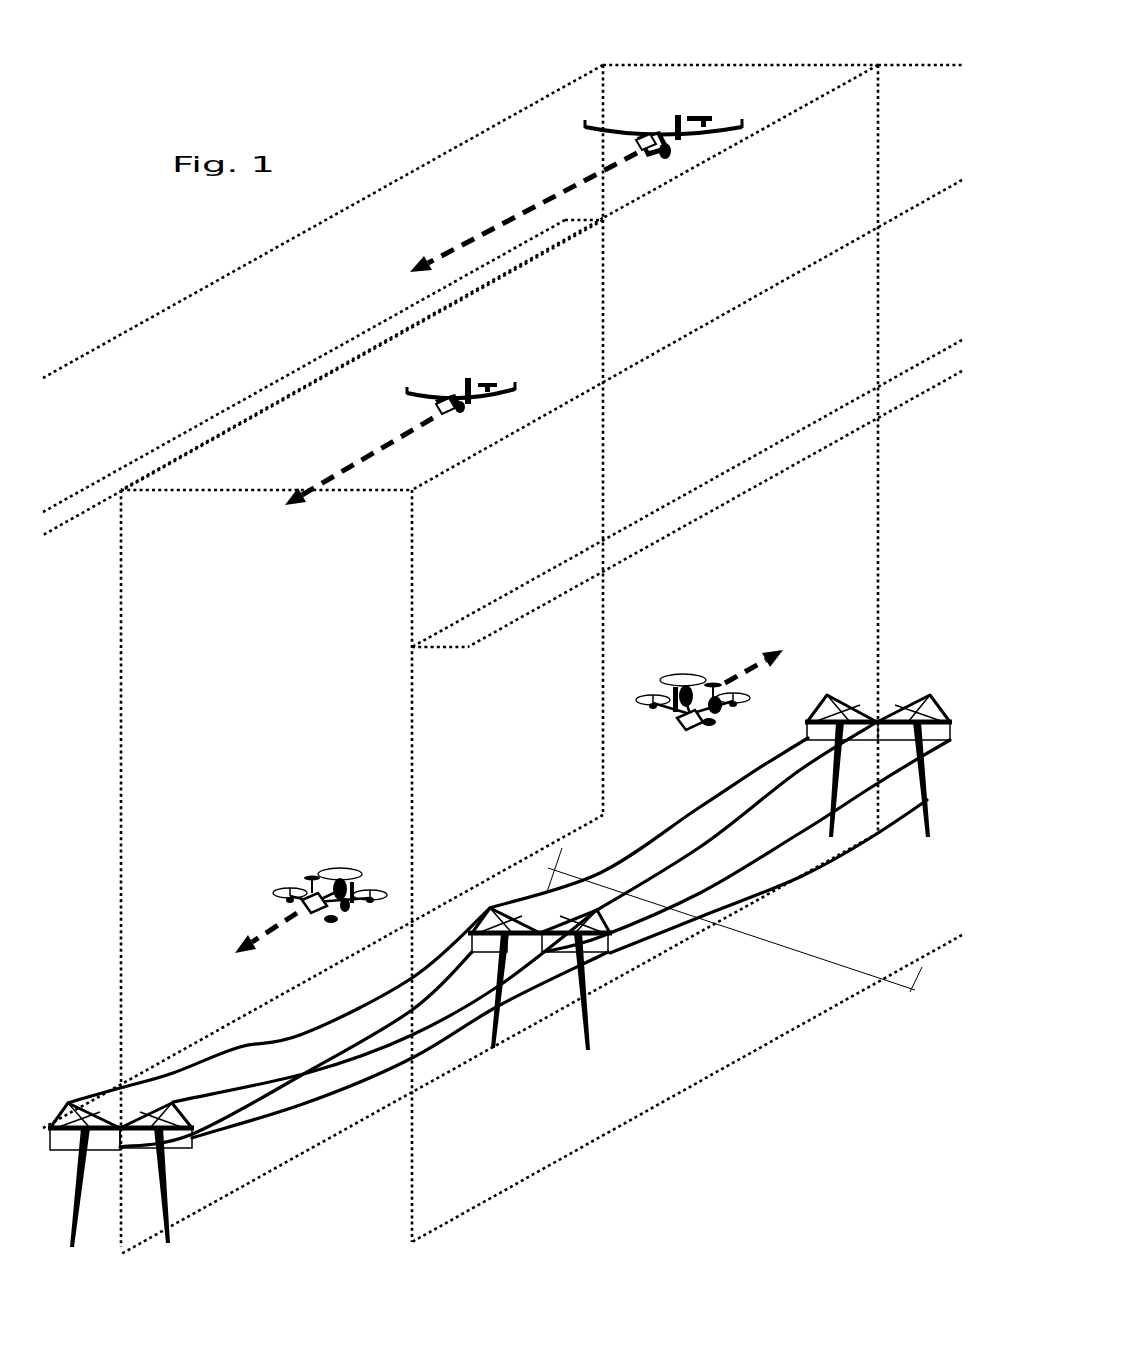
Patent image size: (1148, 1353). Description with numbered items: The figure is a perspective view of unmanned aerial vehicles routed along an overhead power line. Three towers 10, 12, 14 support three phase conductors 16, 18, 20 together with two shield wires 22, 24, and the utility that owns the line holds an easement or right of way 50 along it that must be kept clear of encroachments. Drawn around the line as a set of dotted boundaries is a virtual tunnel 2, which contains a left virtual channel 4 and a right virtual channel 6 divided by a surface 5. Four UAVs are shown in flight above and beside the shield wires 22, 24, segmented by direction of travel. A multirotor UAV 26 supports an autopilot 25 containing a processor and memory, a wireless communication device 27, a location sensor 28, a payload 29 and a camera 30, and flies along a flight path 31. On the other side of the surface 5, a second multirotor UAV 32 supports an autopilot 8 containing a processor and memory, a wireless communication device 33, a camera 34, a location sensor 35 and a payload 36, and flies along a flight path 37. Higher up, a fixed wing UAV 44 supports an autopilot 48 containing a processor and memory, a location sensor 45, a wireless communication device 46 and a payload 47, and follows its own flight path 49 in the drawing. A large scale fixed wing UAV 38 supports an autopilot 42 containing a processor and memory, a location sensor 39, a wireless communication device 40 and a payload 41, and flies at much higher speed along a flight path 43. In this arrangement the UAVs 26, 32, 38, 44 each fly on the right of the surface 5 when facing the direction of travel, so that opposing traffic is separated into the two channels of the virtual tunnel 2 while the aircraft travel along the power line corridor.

The virtual tunnel 2 is at (603, 65).
The left virtual channel 4 is at (750, 65).
The surface 5 is at (878, 138).
The right virtual channel 6 is at (927, 63).
The autopilot 8 is at (331, 903).
The tower 10 is at (137, 1195).
The tower 12 is at (590, 1017).
The tower 14 is at (927, 838).
The phase conductor 16 is at (97, 1148).
The phase conductor 18 is at (170, 1148).
The phase conductor 20 is at (290, 1110).
The shield wire 22 is at (333, 1021).
The shield wire 24 is at (237, 1092).
The autopilot 25 is at (687, 727).
The multirotor UAV 26 is at (675, 717).
The wireless communication device 27 is at (673, 698).
The location sensor 28 is at (715, 685).
The payload 29 is at (703, 725).
The camera 30 is at (722, 708).
The flight path 31 is at (757, 673).
The multirotor UAV 32 is at (347, 912).
The wireless communication device 33 is at (353, 900).
The camera 34 is at (338, 878).
The location sensor 35 is at (312, 877).
The payload 36 is at (333, 920).
The flight path 37 is at (258, 937).
The large scale fixed wing UAV 38 is at (596, 130).
The location sensor 39 is at (663, 135).
The wireless communication device 40 is at (675, 117).
The payload 41 is at (663, 153).
The autopilot 42 is at (637, 143).
The flight path 43 is at (533, 211).
The fixed wing UAV 44 is at (408, 393).
The location sensor 45 is at (460, 392).
The wireless communication device 46 is at (470, 380).
The payload 47 is at (470, 400).
The autopilot 48 is at (442, 414).
The flight direction 49 is at (388, 447).
The right of way 50 is at (734, 920).